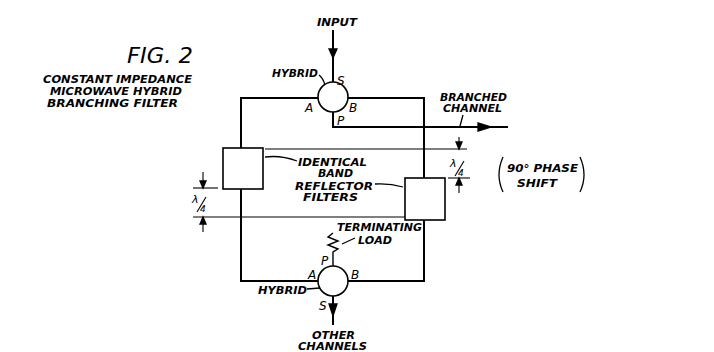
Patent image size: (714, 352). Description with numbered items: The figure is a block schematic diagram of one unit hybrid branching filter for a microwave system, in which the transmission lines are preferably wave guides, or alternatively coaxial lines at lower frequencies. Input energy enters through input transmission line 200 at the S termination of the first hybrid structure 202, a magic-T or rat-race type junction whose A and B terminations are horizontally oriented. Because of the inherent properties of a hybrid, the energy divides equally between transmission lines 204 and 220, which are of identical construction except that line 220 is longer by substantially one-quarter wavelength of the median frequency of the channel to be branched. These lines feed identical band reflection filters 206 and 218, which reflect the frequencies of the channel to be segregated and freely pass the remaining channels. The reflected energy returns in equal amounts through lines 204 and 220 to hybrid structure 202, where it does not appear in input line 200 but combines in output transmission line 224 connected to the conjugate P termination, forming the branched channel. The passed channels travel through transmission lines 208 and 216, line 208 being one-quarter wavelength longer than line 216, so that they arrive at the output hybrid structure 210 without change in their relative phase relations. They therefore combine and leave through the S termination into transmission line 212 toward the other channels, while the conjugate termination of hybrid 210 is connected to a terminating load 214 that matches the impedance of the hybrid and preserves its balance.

The input transmission line 200 is at (337, 42).
The hybrid structure 202 is at (350, 88).
The transmission line 204 is at (259, 96).
The band reflection filter 206 is at (222, 157).
The transmission line 208 is at (241, 258).
The hybrid structure 210 is at (346, 290).
The transmission line 212 is at (337, 317).
The terminating load 214 is at (330, 240).
The transmission line 216 is at (427, 262).
The band reflection filter 218 is at (445, 208).
The transmission line 220 is at (404, 97).
The output transmission line 224 is at (505, 126).